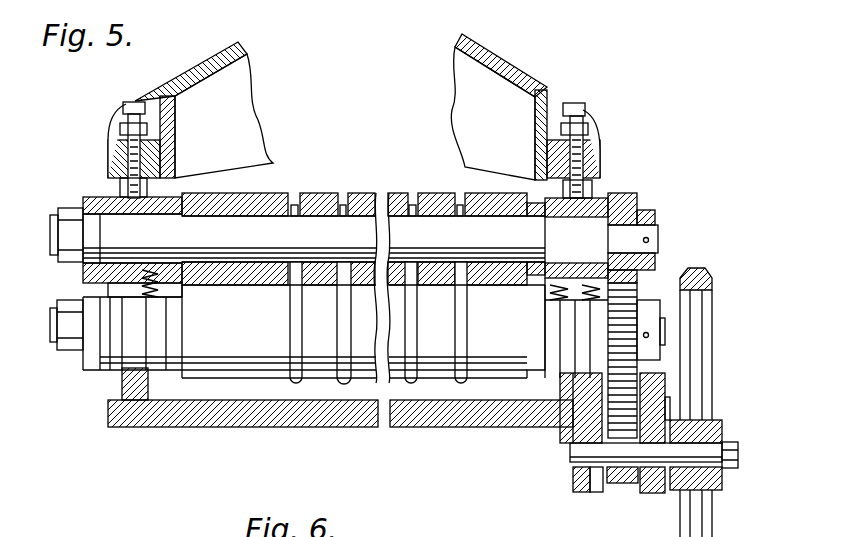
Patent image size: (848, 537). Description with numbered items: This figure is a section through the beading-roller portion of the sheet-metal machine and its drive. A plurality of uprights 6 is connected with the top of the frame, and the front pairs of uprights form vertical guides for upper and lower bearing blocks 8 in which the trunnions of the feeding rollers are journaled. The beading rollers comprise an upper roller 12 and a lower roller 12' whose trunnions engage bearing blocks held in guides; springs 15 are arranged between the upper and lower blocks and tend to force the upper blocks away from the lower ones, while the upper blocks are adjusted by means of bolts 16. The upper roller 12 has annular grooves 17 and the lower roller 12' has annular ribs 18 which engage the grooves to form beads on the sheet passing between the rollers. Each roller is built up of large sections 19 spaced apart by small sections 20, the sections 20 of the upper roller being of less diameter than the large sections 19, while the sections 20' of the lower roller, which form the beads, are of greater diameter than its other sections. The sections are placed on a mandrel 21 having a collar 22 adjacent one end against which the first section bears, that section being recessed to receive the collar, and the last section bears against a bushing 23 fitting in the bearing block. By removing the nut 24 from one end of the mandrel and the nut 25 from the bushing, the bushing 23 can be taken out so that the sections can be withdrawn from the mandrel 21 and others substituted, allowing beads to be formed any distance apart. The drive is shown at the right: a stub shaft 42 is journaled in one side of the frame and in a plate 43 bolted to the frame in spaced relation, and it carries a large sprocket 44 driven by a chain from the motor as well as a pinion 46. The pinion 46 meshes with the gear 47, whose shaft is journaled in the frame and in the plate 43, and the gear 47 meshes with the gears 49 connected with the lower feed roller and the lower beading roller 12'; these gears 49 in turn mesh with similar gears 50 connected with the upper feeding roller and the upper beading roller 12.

The upright 6 is at (128, 382).
The bearing block 8 is at (108, 355).
The upper beading roller 12 is at (319, 217).
The lower beading roller 12' is at (349, 374).
The spring 15 is at (108, 290).
The bolt 16 is at (583, 121).
The annular groove 17 is at (412, 192).
The annular rib 18 is at (468, 328).
The large section 19 is at (362, 192).
The small section 20 is at (324, 248).
The bead-forming section 20' is at (427, 322).
The mandrel 21 is at (432, 224).
The collar 22 is at (530, 236).
The bushing 23 is at (185, 217).
The nut 24 is at (64, 210).
The nut 25 is at (93, 196).
The stub shaft 42 is at (708, 453).
The plate 43 is at (655, 493).
The large sprocket 44 is at (708, 336).
The pinion 46 is at (622, 483).
The gear 47 is at (617, 412).
The gear 49 is at (637, 297).
The gear 50 is at (628, 192).